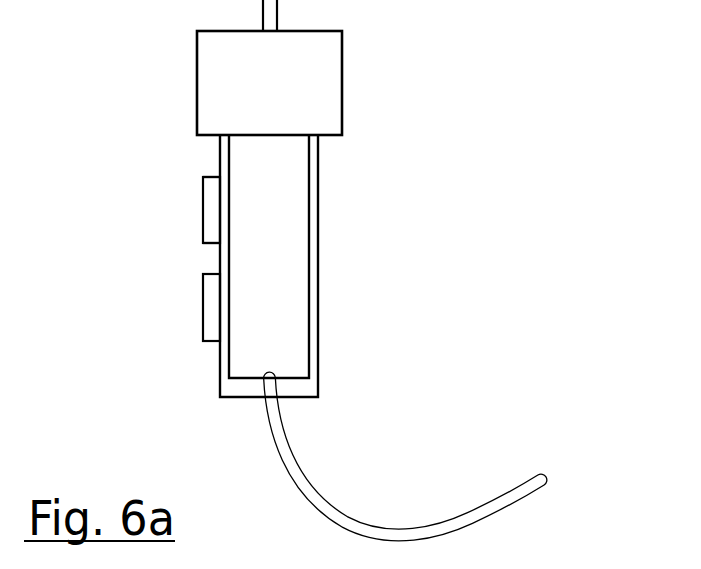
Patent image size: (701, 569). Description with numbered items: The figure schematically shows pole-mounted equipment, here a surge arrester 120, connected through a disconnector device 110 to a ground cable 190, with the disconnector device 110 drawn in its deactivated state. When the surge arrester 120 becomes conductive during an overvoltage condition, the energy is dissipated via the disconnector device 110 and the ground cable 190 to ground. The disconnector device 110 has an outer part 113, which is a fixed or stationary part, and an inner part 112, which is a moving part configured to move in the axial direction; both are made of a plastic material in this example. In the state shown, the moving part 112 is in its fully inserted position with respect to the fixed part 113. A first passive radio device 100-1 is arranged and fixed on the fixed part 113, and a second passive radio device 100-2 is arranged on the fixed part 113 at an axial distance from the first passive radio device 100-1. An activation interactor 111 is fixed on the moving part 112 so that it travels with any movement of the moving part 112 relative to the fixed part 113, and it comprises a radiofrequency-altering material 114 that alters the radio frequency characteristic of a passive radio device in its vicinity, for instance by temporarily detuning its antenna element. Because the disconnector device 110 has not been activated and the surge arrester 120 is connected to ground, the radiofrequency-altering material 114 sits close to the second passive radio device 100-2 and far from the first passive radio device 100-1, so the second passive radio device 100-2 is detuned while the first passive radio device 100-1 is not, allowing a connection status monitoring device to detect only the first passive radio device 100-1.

The surge arrester 120 is at (342, 83).
The disconnector device 110 is at (295, 266).
The outer part 113 is at (318, 161).
The inner part 112 is at (309, 218).
The radiofrequency-altering material 114 is at (222, 183).
The activation interactor 111 is at (222, 221).
The second passive radio device 100-2 is at (203, 237).
The first passive radio device 100-1 is at (203, 329).
The ground cable 190 is at (298, 475).